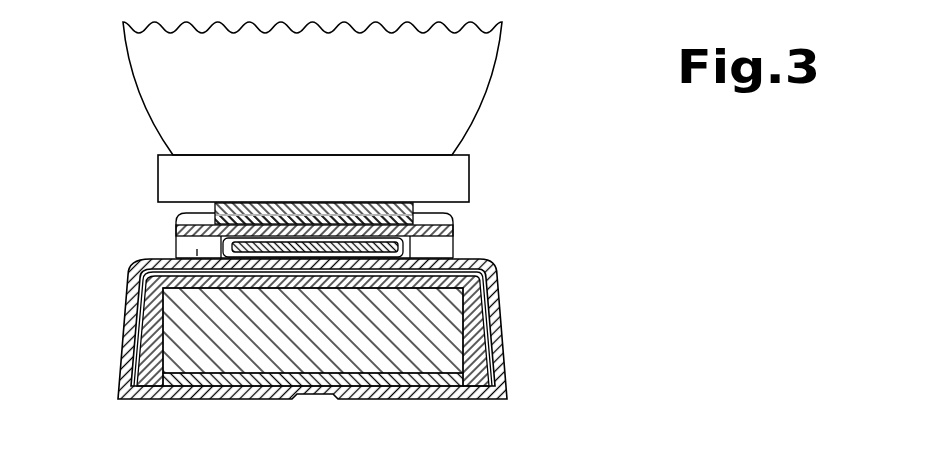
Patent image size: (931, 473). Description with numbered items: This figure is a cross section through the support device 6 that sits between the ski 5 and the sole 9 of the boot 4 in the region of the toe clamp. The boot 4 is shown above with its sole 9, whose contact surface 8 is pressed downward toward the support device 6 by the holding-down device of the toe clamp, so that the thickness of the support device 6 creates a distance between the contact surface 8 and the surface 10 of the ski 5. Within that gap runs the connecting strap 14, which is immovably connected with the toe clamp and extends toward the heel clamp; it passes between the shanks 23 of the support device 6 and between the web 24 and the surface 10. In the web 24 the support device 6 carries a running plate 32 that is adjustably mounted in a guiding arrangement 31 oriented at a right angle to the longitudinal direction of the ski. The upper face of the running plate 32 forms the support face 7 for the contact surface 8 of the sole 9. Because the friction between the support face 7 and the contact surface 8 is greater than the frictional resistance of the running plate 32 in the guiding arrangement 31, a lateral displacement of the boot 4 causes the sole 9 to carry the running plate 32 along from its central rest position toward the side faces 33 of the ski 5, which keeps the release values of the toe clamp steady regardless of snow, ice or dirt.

The boot 4 is at (460, 78).
The ski 5 is at (260, 338).
The support device 6 is at (482, 213).
The support face 7 is at (296, 203).
The contact surface 8 is at (390, 200).
The sole 9 is at (443, 184).
The surface 10 is at (178, 253).
The connecting strap 14 is at (377, 253).
The shanks 23 is at (442, 247).
The web 24 is at (455, 225).
The guiding arrangement 31 is at (177, 221).
The running plate 32 is at (332, 202).
The side faces 33 is at (505, 320).